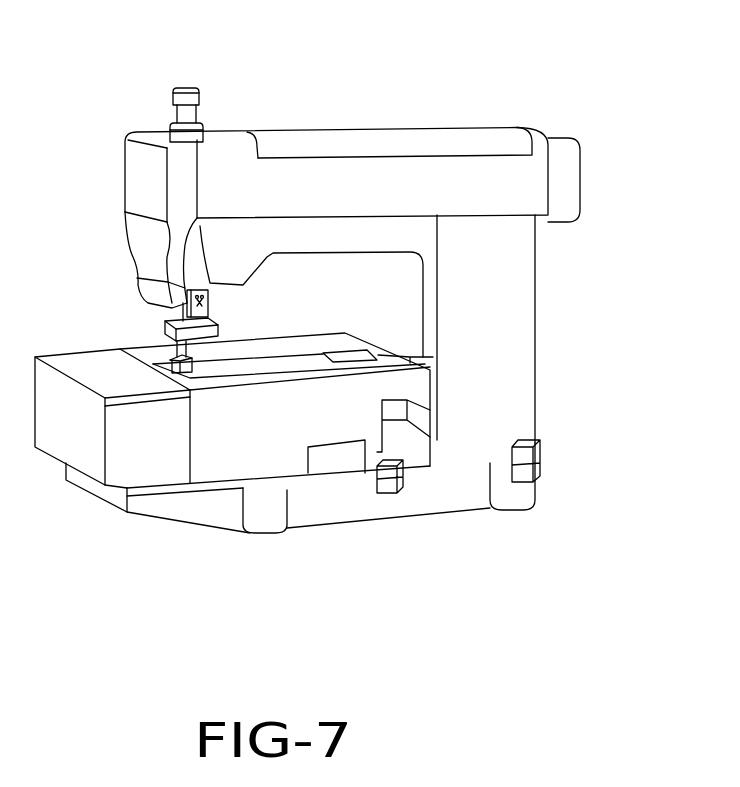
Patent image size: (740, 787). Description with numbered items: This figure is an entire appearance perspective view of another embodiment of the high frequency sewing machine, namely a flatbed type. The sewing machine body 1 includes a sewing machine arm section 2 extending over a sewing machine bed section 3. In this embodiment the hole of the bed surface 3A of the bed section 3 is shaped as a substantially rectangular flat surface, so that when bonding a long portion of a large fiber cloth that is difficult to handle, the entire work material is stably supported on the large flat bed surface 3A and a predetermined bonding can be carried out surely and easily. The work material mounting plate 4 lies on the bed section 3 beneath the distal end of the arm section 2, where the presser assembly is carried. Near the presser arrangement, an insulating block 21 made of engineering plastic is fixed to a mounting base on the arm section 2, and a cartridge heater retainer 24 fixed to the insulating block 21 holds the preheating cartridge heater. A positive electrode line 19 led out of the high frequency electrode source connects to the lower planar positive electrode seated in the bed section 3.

The sewing machine body 1 is at (388, 127).
The sewing machine arm section 2 is at (275, 177).
The sewing machine bed section 3 is at (278, 455).
The bed surface 3A is at (298, 352).
The work material mounting plate 4 is at (188, 372).
The positive electrode line 19 is at (188, 290).
The insulating block 21 is at (212, 321).
The cartridge heater retainer 24 is at (167, 323).